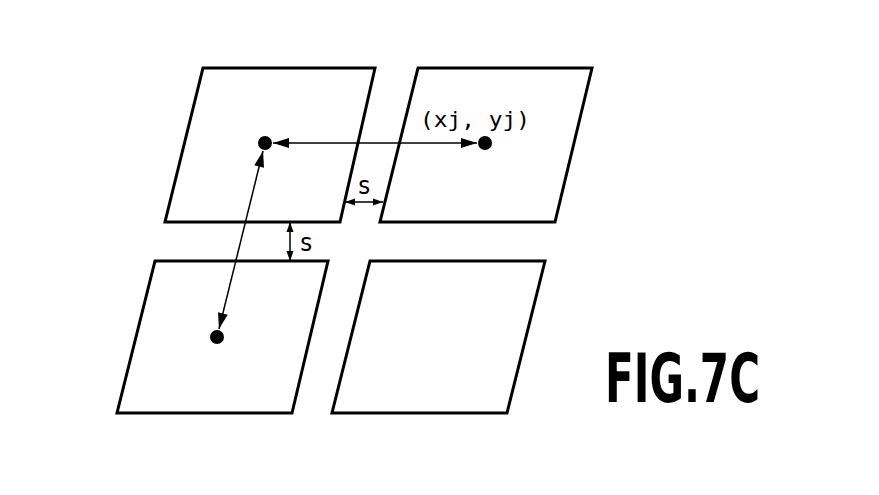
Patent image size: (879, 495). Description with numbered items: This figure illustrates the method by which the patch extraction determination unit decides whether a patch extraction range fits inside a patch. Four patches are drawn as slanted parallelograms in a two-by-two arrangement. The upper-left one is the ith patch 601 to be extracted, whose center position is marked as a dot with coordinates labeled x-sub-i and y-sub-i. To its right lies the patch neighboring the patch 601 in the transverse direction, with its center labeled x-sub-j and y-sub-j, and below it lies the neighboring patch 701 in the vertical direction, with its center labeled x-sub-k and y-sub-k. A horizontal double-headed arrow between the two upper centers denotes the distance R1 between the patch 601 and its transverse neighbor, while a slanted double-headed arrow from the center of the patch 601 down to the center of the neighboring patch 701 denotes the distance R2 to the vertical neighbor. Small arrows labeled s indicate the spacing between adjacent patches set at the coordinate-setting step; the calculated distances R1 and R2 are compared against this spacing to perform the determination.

The ith patch 601 is at (185, 141).
The neighboring patch 701 is at (137, 331).
The distance between the ith patch and the transversely neighboring patch R1 is at (332, 142).
The distance between the ith patch and the vertically neighboring patch R2 is at (250, 197).